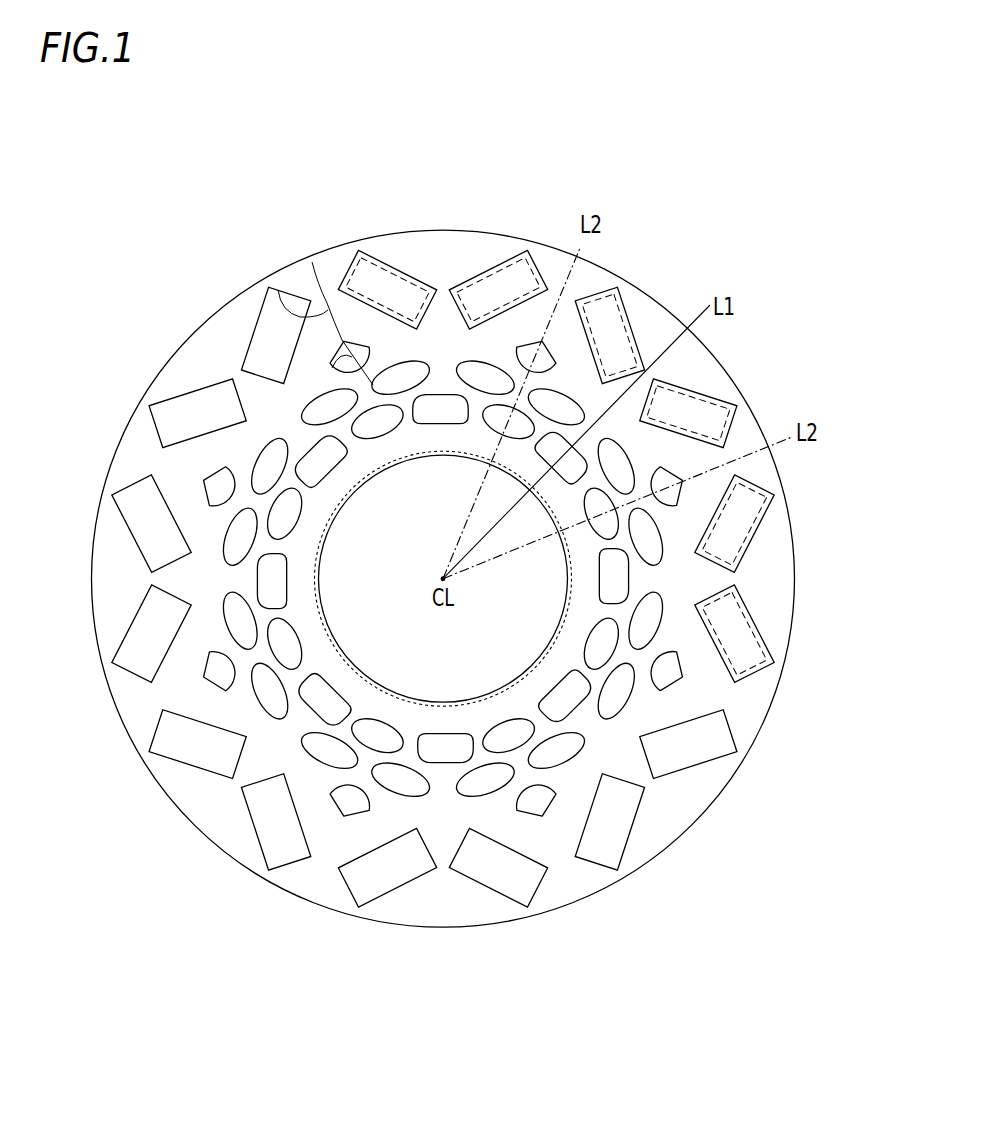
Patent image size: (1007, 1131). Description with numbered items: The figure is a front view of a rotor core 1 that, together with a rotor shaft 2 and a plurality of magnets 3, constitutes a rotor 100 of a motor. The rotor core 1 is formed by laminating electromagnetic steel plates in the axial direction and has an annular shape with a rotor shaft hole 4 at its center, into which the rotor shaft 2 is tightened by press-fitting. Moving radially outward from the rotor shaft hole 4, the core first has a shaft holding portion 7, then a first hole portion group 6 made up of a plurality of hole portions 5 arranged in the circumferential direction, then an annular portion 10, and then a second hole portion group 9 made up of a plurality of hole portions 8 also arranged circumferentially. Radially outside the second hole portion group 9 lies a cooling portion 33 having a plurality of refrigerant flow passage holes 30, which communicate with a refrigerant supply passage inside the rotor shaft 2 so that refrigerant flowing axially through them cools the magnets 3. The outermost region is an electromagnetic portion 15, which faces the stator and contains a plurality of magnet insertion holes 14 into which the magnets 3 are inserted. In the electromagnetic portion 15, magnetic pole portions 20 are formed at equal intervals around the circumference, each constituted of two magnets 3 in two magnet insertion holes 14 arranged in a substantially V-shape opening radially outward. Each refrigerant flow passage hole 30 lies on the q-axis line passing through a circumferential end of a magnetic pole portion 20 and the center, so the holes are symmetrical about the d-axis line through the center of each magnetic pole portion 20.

The rotor 100 is at (597, 158).
The rotor core 1 is at (490, 233).
The magnetic pole portion 20 is at (425, 245).
The rotor shaft 2 is at (527, 674).
The rotor shaft hole 4 is at (322, 538).
The magnet 3 is at (627, 320).
The magnet insertion hole 14 is at (728, 548).
The refrigerant flow passage hole 30 is at (372, 357).
The cooling portion 33 is at (332, 368).
The electromagnetic portion 15 is at (278, 288).
The hole portion 5 is at (597, 592).
The first hole portion group 6 is at (310, 450).
The shaft holding portion 7 is at (308, 527).
The hole portion 8 is at (660, 566).
The second hole portion group 9 is at (224, 556).
The annular portion 10 is at (262, 520).